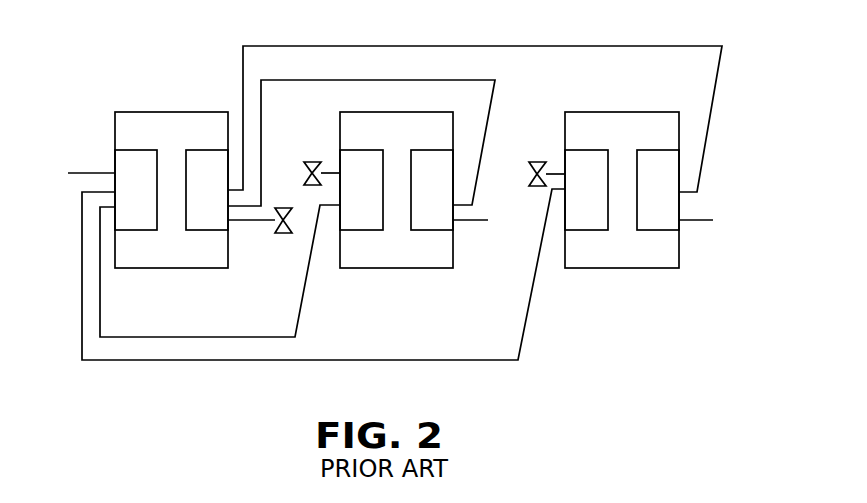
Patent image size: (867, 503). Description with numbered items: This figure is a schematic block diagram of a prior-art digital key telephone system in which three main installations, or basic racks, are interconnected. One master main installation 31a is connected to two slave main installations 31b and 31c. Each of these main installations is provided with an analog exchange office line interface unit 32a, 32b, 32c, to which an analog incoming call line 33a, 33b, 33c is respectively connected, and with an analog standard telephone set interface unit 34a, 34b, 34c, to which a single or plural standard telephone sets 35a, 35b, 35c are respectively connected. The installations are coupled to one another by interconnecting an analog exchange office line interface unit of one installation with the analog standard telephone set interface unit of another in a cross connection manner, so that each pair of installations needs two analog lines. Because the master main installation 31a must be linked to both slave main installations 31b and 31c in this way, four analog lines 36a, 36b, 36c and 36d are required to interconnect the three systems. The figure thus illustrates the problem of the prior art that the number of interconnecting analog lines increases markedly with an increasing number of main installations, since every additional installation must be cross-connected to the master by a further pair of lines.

The master main installation 31a is at (163, 268).
The slave main installation 31b is at (390, 268).
The slave main installation 31c is at (615, 268).
The analog exchange office line interface unit 32a is at (136, 190).
The analog exchange office line interface unit 32b is at (432, 190).
The analog exchange office line interface unit 32c is at (658, 190).
The analog incoming call line 33a is at (84, 172).
The analog incoming call line 33b is at (481, 219).
The analog incoming call line 33c is at (697, 219).
The analog standard telephone set interface unit 34a is at (207, 190).
The analog standard telephone set interface unit 34b is at (361, 190).
The analog standard telephone set interface unit 34c is at (586, 190).
The standard telephone set 35a is at (283, 234).
The standard telephone set 35b is at (311, 161).
The standard telephone set 35c is at (536, 161).
The analog line 36a is at (225, 338).
The analog line 36b is at (438, 361).
The analog line 36c is at (447, 45).
The analog line 36d is at (447, 79).